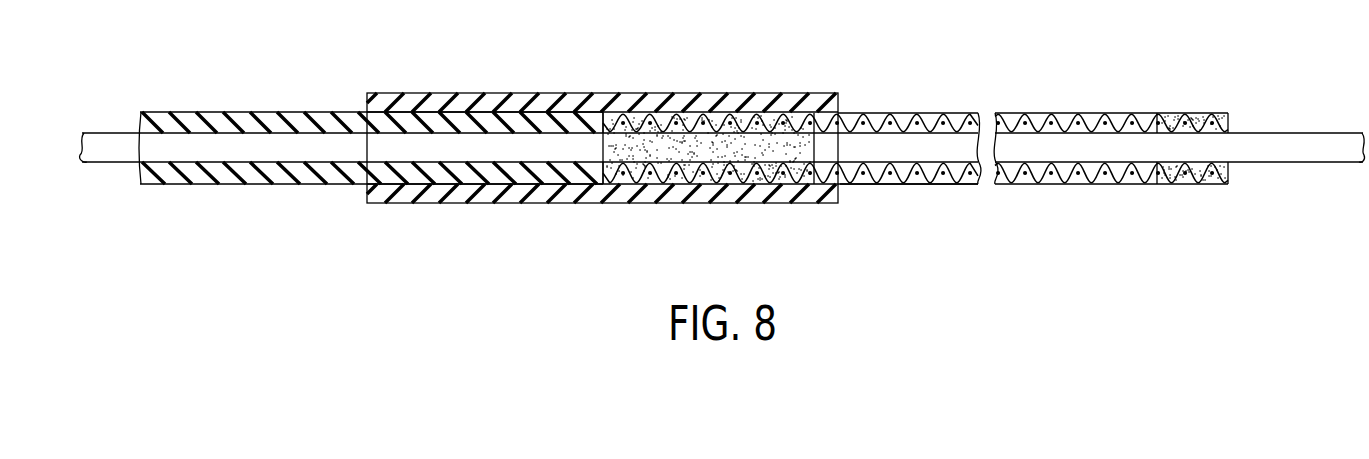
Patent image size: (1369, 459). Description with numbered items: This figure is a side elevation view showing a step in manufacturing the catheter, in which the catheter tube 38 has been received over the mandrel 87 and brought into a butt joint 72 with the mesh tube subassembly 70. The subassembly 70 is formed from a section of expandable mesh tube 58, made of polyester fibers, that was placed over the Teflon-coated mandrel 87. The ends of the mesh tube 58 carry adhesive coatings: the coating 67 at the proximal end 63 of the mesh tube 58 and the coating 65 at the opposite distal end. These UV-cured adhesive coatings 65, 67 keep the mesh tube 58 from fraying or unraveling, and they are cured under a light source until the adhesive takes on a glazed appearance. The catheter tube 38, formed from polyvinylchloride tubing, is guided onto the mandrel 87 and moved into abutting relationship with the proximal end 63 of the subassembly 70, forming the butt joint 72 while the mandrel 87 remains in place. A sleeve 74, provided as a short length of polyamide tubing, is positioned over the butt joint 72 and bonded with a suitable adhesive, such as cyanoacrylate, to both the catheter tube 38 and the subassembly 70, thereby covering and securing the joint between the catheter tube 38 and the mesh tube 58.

The catheter tube 38 is at (277, 118).
The expandable mesh tube 58 is at (925, 120).
The proximal end of mesh tube 63 is at (639, 206).
The adhesive coating at distal end 65 is at (1196, 112).
The adhesive coating at proximal end 67 is at (735, 120).
The mesh tube subassembly 70 is at (899, 204).
The butt joint 72 is at (600, 178).
The sleeve 74 is at (568, 103).
The mandrel 87 is at (113, 141).